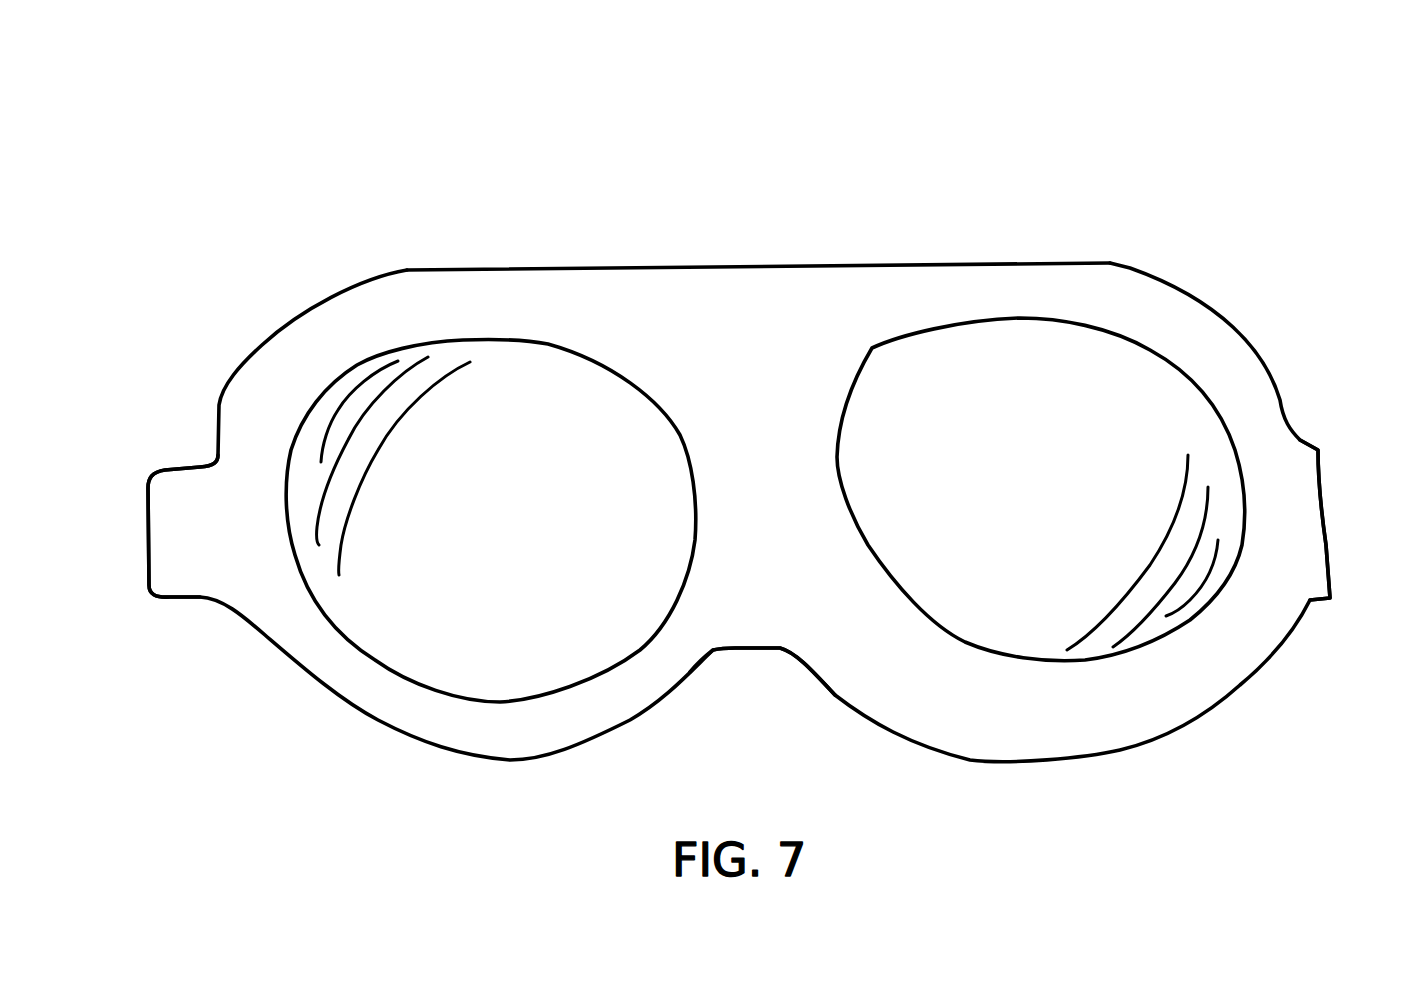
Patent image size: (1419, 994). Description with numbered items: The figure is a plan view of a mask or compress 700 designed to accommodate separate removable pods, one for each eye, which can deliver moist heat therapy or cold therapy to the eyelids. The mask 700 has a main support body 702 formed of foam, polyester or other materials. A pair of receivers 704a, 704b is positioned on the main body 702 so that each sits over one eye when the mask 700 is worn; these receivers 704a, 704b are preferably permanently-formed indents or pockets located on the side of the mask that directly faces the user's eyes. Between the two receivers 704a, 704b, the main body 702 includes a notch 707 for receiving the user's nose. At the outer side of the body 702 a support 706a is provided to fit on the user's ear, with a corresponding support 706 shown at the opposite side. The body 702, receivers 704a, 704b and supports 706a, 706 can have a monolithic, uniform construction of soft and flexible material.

The mask or compress 700 is at (739, 408).
The main support body 702 is at (736, 315).
The receiver 704a is at (507, 402).
The receiver 704b is at (1011, 380).
The support 706a is at (175, 492).
The right side edge 706 is at (1316, 447).
The notch 707 is at (770, 682).